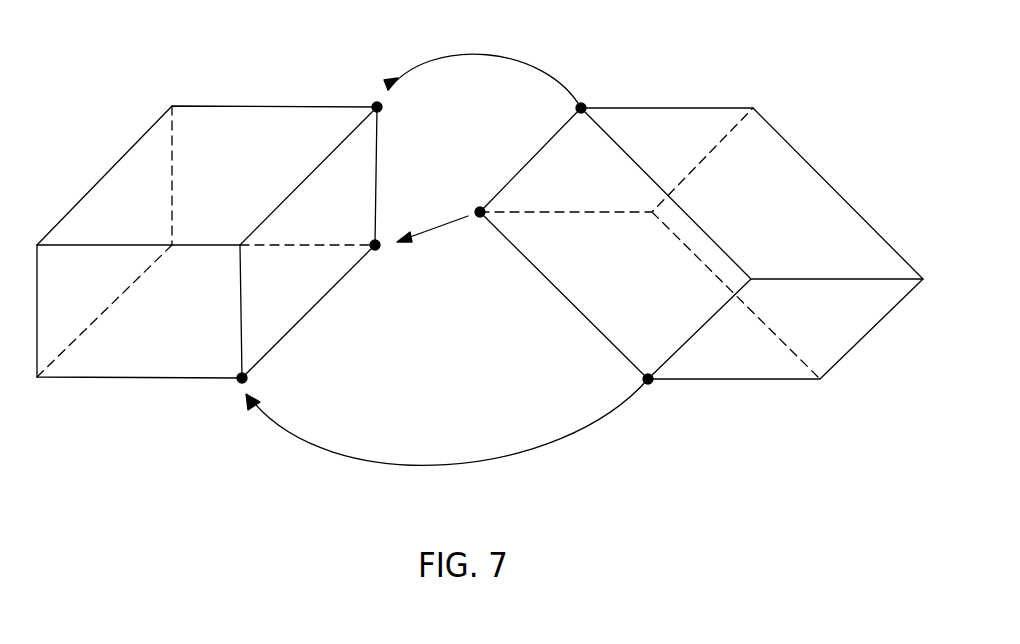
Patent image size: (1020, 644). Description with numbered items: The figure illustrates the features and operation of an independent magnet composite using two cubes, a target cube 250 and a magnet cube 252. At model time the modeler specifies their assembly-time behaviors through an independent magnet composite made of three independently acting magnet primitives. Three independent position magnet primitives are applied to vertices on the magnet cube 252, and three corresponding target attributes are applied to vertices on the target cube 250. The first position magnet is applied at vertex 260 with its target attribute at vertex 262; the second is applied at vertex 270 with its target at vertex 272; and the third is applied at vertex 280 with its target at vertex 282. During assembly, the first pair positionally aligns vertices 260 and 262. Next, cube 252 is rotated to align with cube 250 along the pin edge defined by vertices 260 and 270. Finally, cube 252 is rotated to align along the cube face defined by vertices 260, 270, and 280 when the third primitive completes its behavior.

The target cube 250 is at (92, 279).
The magnet cube 252 is at (782, 330).
The vertex of magnet cube 260 is at (477, 208).
The vertex of target cube 262 is at (377, 247).
The vertex of magnet cube 270 is at (581, 106).
The vertex of target cube 272 is at (372, 104).
The vertex of magnet cube 280 is at (650, 381).
The vertex of target cube 282 is at (238, 392).